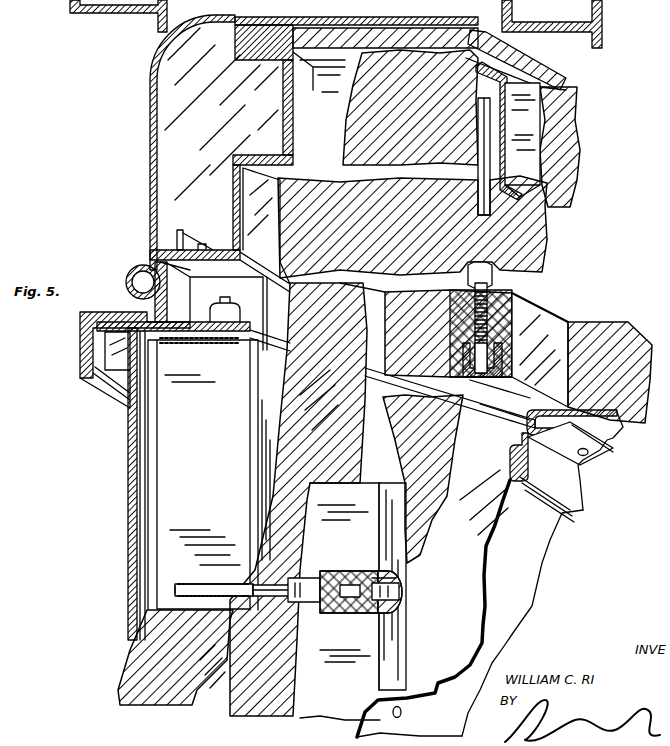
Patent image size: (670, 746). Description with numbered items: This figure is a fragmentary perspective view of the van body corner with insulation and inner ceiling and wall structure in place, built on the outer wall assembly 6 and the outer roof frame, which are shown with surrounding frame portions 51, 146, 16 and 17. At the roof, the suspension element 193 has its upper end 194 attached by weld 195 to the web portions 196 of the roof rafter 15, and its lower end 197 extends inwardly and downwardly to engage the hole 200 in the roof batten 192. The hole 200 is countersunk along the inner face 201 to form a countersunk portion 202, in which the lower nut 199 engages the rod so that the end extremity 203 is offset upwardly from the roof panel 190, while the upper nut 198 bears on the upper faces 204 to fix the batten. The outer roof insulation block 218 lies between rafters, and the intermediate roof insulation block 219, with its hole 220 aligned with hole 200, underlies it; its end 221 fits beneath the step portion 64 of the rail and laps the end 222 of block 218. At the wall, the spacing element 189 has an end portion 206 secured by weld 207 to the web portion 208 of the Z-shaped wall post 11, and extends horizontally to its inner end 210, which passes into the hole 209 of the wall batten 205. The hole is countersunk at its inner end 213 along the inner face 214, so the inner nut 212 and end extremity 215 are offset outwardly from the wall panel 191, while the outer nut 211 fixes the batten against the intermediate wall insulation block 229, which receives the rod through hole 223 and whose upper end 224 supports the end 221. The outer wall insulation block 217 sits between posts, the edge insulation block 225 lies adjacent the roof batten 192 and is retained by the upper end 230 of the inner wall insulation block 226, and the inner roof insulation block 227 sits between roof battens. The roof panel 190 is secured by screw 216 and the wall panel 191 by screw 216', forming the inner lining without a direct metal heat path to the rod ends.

The top frame member 51 is at (305, 16).
The frame channel 146 is at (500, 12).
The roof rafter 15 is at (500, 72).
The housing shell 16 is at (150, 178).
The housing wall 17 is at (283, 125).
The step portion 64 is at (256, 155).
The web portions 196 is at (340, 118).
The outer roof insulation block 218 is at (338, 142).
The end 222 is at (300, 178).
The intermediate roof insulation block 219 is at (282, 264).
The end 221 is at (277, 289).
The weld 195 is at (494, 128).
The upper end 194 is at (490, 166).
The suspension element 193 is at (505, 197).
The hole 220 is at (470, 243).
The upper nut 198 is at (495, 273).
The upper end 224 is at (378, 297).
The lower end 197 is at (452, 320).
The lower nut 199 is at (498, 355).
The hole 200 is at (522, 300).
The upper faces 204 is at (560, 312).
The roof batten 192 is at (576, 320).
The countersunk portion 202 is at (460, 382).
The end extremity 203 is at (478, 392).
The inner face 201 is at (500, 408).
The upper end 230 is at (528, 414).
The roof panel 190 is at (615, 448).
The screw 216 is at (599, 466).
The inner roof insulation block 227 is at (625, 430).
The wall panel 191 is at (543, 553).
The intermediate wall insulation block 229 is at (295, 712).
The edge insulation block 225 is at (402, 392).
The wall batten 205 is at (382, 482).
The inner face 214 is at (407, 635).
The inner wall insulation block 226 is at (393, 681).
The wall post 11 is at (128, 470).
The outer wall assembly 6 is at (128, 495).
The web portion 208 is at (173, 543).
The outer wall insulation block 217 is at (203, 700).
The hole 223 is at (246, 585).
The end portion 206 is at (200, 583).
The weld 207 is at (208, 577).
The spacing element 189 is at (287, 572).
The inner end 210 is at (327, 612).
The outer nut 211 is at (350, 570).
The hole 209 is at (352, 613).
The inner nut 212 is at (398, 608).
The end extremity 215 is at (400, 593).
The countersunk inner end 213 is at (400, 580).
The screw 216' is at (419, 716).